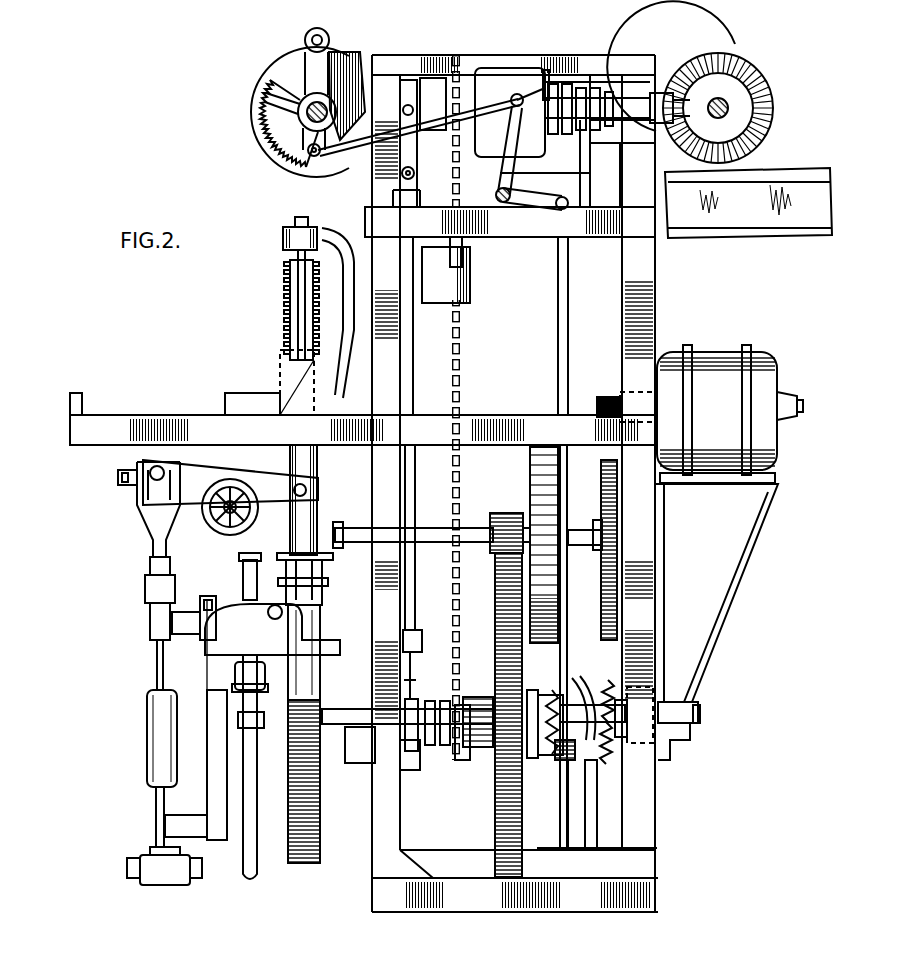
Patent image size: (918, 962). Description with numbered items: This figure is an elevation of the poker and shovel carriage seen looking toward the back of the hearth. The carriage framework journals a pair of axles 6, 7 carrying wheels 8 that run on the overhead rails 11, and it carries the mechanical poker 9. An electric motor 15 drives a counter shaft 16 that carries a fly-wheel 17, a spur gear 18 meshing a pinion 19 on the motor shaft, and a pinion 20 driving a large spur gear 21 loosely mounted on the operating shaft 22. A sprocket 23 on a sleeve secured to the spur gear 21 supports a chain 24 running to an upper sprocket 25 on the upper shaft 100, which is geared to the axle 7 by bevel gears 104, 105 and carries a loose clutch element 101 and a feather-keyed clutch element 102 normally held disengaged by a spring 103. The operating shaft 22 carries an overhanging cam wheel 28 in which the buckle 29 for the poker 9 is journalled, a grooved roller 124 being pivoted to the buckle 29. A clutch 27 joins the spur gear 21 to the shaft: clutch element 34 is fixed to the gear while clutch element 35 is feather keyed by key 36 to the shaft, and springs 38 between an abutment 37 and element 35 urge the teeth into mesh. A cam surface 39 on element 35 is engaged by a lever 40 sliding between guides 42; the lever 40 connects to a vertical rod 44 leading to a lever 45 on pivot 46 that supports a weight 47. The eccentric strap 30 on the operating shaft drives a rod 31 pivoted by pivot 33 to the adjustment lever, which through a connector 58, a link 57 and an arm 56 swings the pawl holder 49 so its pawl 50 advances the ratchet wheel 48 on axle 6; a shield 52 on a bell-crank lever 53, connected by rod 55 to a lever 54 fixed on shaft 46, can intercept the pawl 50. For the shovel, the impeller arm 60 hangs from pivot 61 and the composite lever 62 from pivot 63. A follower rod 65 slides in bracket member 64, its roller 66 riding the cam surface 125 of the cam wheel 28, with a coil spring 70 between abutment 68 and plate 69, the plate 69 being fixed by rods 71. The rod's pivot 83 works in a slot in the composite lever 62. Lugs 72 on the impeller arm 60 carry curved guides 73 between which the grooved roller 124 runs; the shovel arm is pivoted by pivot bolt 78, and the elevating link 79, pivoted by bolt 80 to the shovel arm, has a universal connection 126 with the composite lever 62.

The axle 6 is at (305, 132).
The axle 7 is at (718, 118).
The wheels 8 is at (297, 167).
The mechanical poker 9 is at (246, 860).
The rails 11 is at (780, 174).
The electric motor 15 is at (730, 414).
The counter shaft 16 is at (432, 528).
The fly-wheel 17 is at (540, 478).
The spur gear 18 is at (603, 570).
The pinion 19 is at (602, 396).
The pinion 20 is at (492, 546).
The large spur gear 21 is at (495, 640).
The operating shaft 22 is at (342, 712).
The sprocket 23 is at (445, 745).
The chain 24 is at (462, 460).
The upper sprocket 25 is at (456, 70).
The clutch 27 is at (542, 698).
The cam wheel 28 is at (320, 802).
The buckle 29 is at (215, 640).
The strap 30 is at (418, 762).
The rod 31 is at (413, 385).
The pivot 33 is at (412, 180).
The clutch element 34 is at (540, 698).
The clutch element 35 is at (560, 705).
The key 36 is at (607, 740).
The abutment 37 is at (660, 684).
The springs 38 is at (608, 688).
The cam surface 39 is at (576, 688).
The lever 40 is at (577, 756).
The guides 42 is at (588, 835).
The vertical rod 44 is at (560, 298).
The lever 45 is at (527, 197).
The pivot 46 is at (470, 214).
The weight 47 is at (470, 280).
The ratchet wheel 48 is at (287, 135).
The pawl holder 49 is at (300, 62).
The pawl 50 is at (330, 38).
The shield 52 is at (277, 100).
The bell-crank lever 53 is at (300, 116).
The lever 54 is at (516, 160).
The rod 55 is at (322, 156).
The arm 56 is at (383, 128).
The link 57 is at (418, 160).
The connector 58 is at (396, 192).
The impeller arm 60 is at (140, 530).
The pivot 61 is at (76, 445).
The composite lever 62 is at (285, 484).
The pivot 63 is at (252, 512).
The bracket member 64 is at (338, 372).
The follower rod 65 is at (318, 460).
The roller 66 is at (322, 582).
The abutment 68 is at (280, 378).
The plate 69 is at (285, 270).
The coil spring 70 is at (288, 300).
The rods 71 is at (300, 286).
The lugs 72 is at (172, 623).
The guides 73 is at (210, 726).
The pivot bolt 78 is at (127, 868).
The elevating link 79 is at (148, 735).
The pivot bolt 80 is at (142, 880).
The pivot 83 is at (308, 491).
The upper shaft 100 is at (427, 100).
The clutch element 101 is at (497, 68).
The clutch element 102 is at (532, 80).
The spring 103 is at (592, 125).
The bevel gear 104 is at (722, 56).
The bevel gear 105 is at (660, 93).
The grooved roller 124 is at (206, 596).
The cam surface 125 is at (320, 678).
The universal connection 126 is at (120, 480).